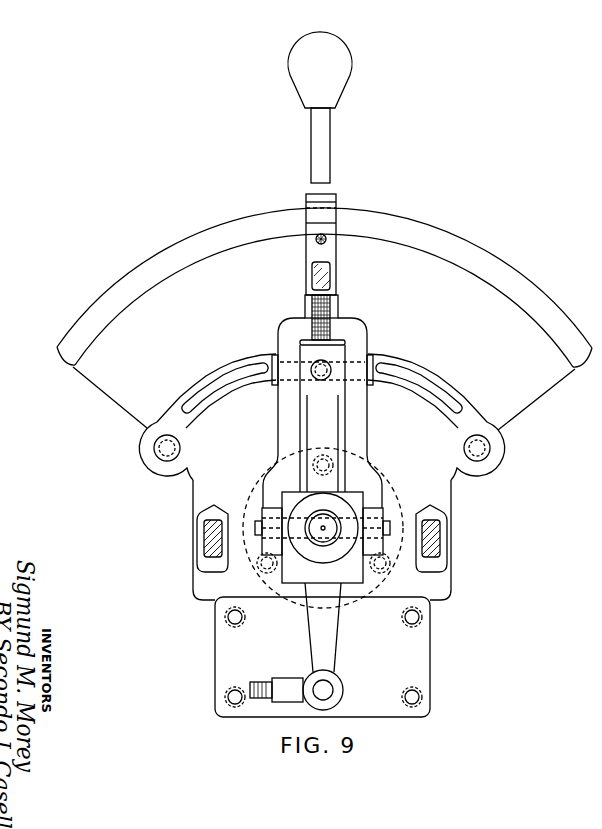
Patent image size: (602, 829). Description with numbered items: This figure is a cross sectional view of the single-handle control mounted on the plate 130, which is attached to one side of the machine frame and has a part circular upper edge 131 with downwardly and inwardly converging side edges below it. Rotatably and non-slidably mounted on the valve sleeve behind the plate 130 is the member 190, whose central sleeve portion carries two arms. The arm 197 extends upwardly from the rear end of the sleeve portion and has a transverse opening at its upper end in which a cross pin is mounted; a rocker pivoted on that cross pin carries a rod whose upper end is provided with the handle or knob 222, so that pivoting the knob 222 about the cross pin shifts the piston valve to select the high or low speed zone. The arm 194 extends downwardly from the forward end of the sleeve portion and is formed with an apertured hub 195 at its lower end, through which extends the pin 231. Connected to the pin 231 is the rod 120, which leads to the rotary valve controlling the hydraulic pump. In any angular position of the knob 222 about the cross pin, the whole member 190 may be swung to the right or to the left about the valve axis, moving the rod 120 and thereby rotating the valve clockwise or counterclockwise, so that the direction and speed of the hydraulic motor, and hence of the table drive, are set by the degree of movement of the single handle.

The handle or knob 222 is at (333, 70).
The part circular upper edge 131 is at (497, 263).
The plate 130 is at (525, 388).
The arm 197 is at (332, 427).
The member 190 is at (343, 633).
The arm 194 is at (315, 632).
The apertured hub 195 is at (333, 698).
The pin 231 is at (326, 690).
The rod 120 is at (257, 681).